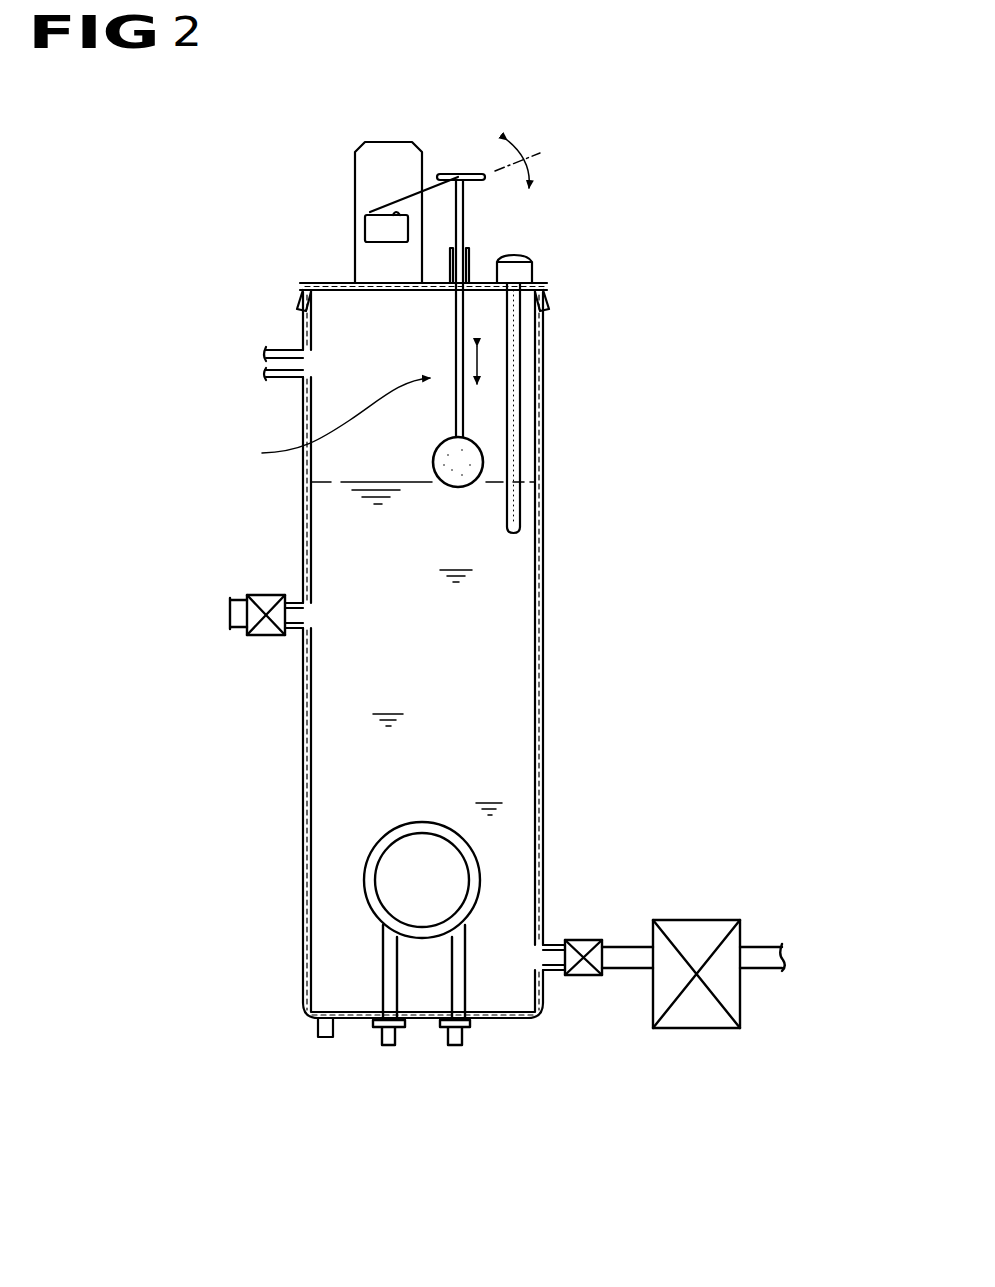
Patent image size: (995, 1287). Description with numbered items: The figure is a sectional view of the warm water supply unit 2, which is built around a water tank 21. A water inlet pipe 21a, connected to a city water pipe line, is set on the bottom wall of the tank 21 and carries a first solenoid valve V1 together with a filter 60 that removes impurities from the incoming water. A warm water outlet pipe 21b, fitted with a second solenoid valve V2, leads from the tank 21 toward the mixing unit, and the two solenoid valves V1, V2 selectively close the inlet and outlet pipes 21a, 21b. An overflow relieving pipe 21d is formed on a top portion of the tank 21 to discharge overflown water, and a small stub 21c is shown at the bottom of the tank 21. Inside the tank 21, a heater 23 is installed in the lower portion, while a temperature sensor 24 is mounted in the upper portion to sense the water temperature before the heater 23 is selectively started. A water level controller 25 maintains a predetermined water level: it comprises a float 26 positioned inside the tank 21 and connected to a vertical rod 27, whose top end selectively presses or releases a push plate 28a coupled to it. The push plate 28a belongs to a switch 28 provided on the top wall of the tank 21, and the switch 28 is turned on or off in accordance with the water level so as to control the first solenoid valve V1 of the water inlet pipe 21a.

The warm water supply unit 2 is at (661, 264).
The water tank 21 is at (543, 625).
The water inlet pipe 21a is at (554, 971).
The warm water outlet pipe 21b is at (290, 597).
The drain stub 21c is at (320, 1032).
The overflow relieving pipe 21d is at (292, 350).
The heater 23 is at (366, 880).
The temperature sensor 24 is at (520, 418).
The water level controller 25 is at (326, 425).
The float 26 is at (483, 465).
The vertical rod 27 is at (464, 238).
The switch 28 is at (365, 228).
The push plate 28a is at (407, 193).
The filter 60 is at (697, 925).
The first solenoid valve V1 is at (586, 940).
The second solenoid valve V2 is at (262, 636).